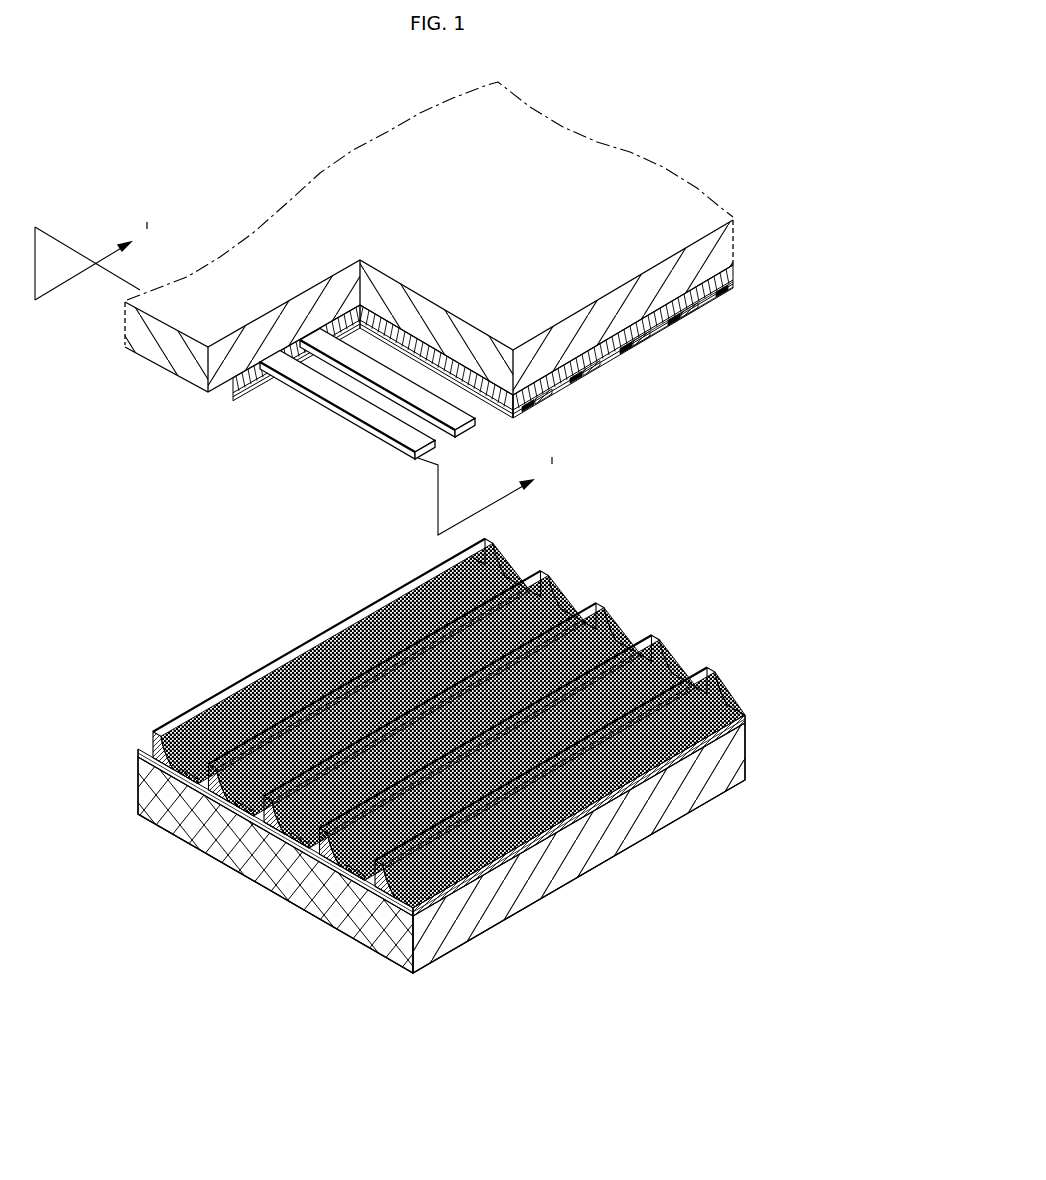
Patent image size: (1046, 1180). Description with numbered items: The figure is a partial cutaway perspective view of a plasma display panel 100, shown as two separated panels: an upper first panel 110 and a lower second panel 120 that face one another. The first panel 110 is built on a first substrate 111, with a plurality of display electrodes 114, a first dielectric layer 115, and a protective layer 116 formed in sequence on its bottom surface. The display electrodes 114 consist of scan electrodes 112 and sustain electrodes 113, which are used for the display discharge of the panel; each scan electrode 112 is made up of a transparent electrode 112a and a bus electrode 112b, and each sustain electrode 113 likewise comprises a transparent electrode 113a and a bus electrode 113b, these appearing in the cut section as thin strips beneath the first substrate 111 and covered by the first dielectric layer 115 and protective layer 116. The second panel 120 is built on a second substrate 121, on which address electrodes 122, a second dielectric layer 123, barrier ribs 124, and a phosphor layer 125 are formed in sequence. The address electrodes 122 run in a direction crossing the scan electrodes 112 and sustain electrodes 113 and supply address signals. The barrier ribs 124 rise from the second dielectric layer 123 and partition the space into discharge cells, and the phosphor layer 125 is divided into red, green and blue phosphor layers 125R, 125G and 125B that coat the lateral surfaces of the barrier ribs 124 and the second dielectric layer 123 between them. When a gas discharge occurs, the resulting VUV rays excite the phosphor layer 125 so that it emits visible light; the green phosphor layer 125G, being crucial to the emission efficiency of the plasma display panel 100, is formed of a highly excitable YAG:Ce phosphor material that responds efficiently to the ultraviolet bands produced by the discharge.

The plasma display panel 100 is at (107, 104).
The first panel 110 is at (670, 141).
The first substrate 111 is at (727, 237).
The scan electrode 112 is at (700, 388).
The transparent electrode 112a is at (660, 330).
The bus electrode 112b is at (642, 337).
The sustain electrode 113 is at (788, 337).
The transparent electrode 113a is at (713, 300).
The bus electrode 113b is at (703, 307).
The display electrode 114 is at (792, 388).
The first dielectric layer 115 is at (733, 272).
The protective layer 116 is at (733, 290).
The second panel 120 is at (670, 613).
The second substrate 121 is at (572, 868).
The address electrode 122 is at (357, 888).
The second dielectric layer 123 is at (373, 905).
The barrier rib 124 is at (345, 860).
The phosphor layer 125 is at (210, 933).
The red phosphor layer 125R is at (173, 757).
The green phosphor layer 125G is at (262, 793).
The blue phosphor layer 125B is at (318, 828).